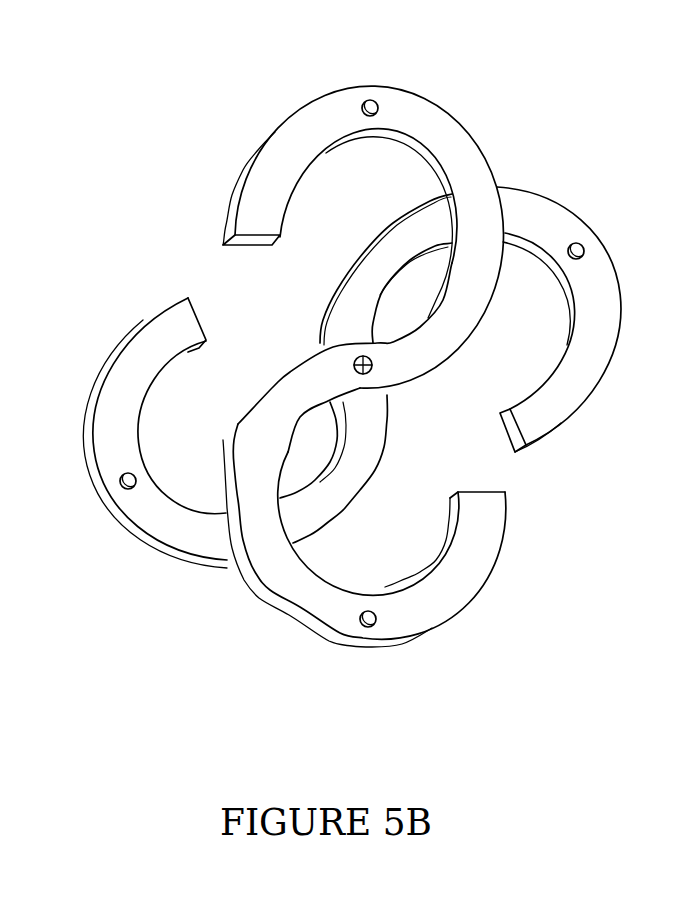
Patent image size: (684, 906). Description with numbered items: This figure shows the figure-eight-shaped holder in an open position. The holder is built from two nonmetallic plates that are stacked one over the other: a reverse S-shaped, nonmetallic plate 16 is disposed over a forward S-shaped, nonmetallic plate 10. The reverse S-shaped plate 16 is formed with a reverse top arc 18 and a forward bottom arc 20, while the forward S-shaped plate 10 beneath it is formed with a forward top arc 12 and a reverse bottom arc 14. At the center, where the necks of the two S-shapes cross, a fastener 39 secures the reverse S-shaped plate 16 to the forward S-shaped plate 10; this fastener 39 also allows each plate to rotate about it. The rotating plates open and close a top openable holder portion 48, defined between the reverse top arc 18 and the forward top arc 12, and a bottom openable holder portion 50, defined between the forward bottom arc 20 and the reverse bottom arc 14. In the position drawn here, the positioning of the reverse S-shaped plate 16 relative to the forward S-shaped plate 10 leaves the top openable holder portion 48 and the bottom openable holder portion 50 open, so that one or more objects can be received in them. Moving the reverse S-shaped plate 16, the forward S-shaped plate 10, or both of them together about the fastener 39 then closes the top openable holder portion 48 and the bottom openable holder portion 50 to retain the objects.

The forward S-shaped, nonmetallic plate 10 is at (343, 379).
The forward top arc 12 is at (578, 375).
The reverse bottom arc 14 is at (177, 327).
The reverse S-shaped, nonmetallic plate 16 is at (337, 366).
The reverse top arc 18 is at (272, 175).
The forward bottom arc 20 is at (475, 523).
The fastener 39 is at (356, 359).
The top openable holder portion 48 is at (413, 293).
The bottom openable holder portion 50 is at (300, 453).